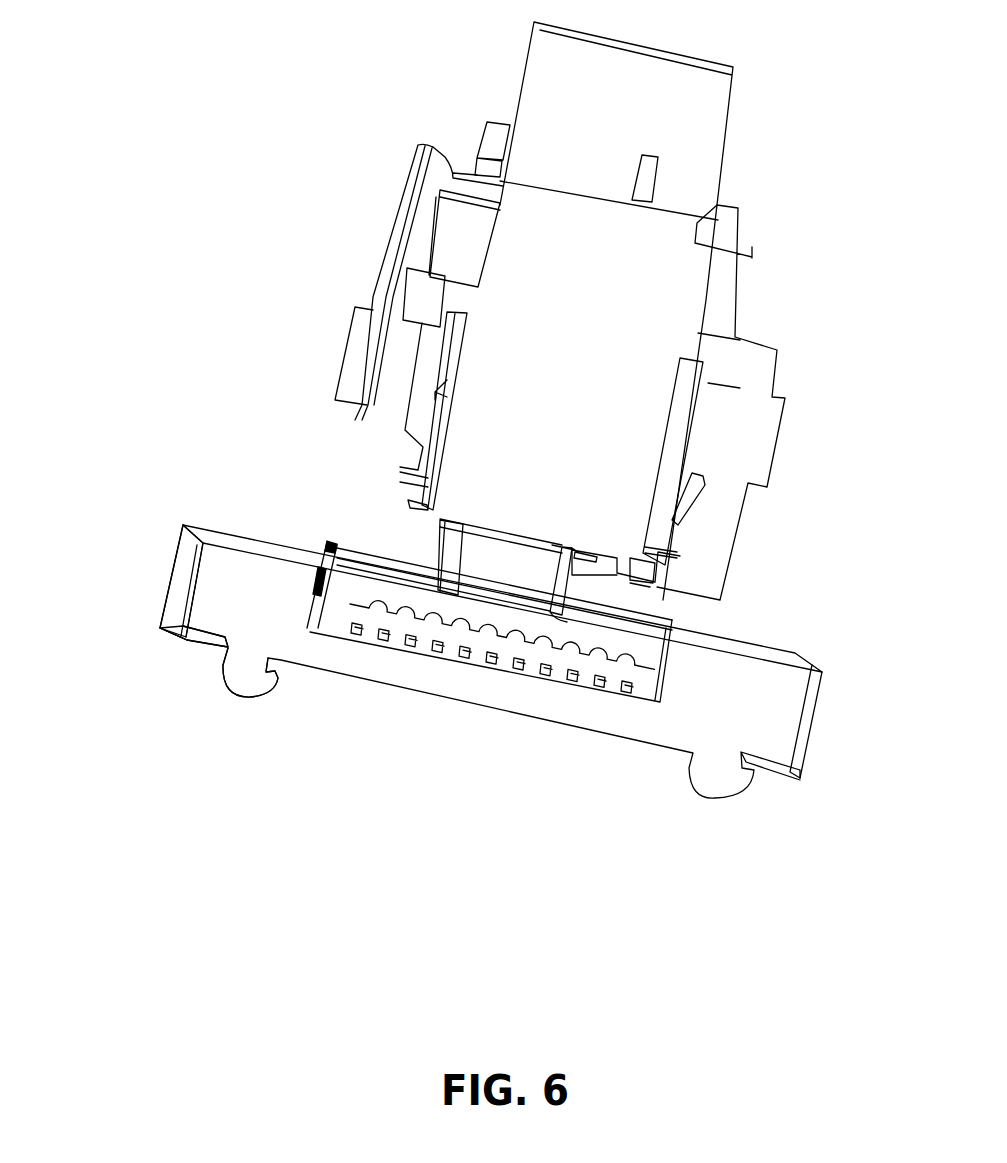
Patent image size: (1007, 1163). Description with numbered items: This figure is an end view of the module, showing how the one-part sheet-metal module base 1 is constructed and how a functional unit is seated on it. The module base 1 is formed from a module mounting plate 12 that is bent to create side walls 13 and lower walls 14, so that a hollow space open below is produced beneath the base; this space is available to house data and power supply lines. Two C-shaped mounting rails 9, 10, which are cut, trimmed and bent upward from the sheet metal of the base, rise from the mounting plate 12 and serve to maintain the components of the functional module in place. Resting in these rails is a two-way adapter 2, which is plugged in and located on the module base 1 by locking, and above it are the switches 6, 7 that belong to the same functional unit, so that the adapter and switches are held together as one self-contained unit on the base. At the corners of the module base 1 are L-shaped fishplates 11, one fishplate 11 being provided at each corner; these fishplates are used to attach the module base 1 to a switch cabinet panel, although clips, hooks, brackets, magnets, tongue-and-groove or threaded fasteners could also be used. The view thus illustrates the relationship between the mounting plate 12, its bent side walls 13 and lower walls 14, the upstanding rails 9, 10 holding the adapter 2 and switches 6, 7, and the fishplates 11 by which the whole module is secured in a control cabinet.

The module base 1 is at (712, 727).
The two-way adapter 2 is at (607, 665).
The switch 6 is at (608, 293).
The switch 7 is at (568, 148).
The C-shaped mounting rail 9 is at (448, 560).
The C-shaped mounting rail 10 is at (558, 582).
The L-shaped fishplate 11 is at (233, 663).
The module mounting plate 12 is at (255, 540).
The side wall 13 is at (175, 577).
The lower wall 14 is at (203, 635).